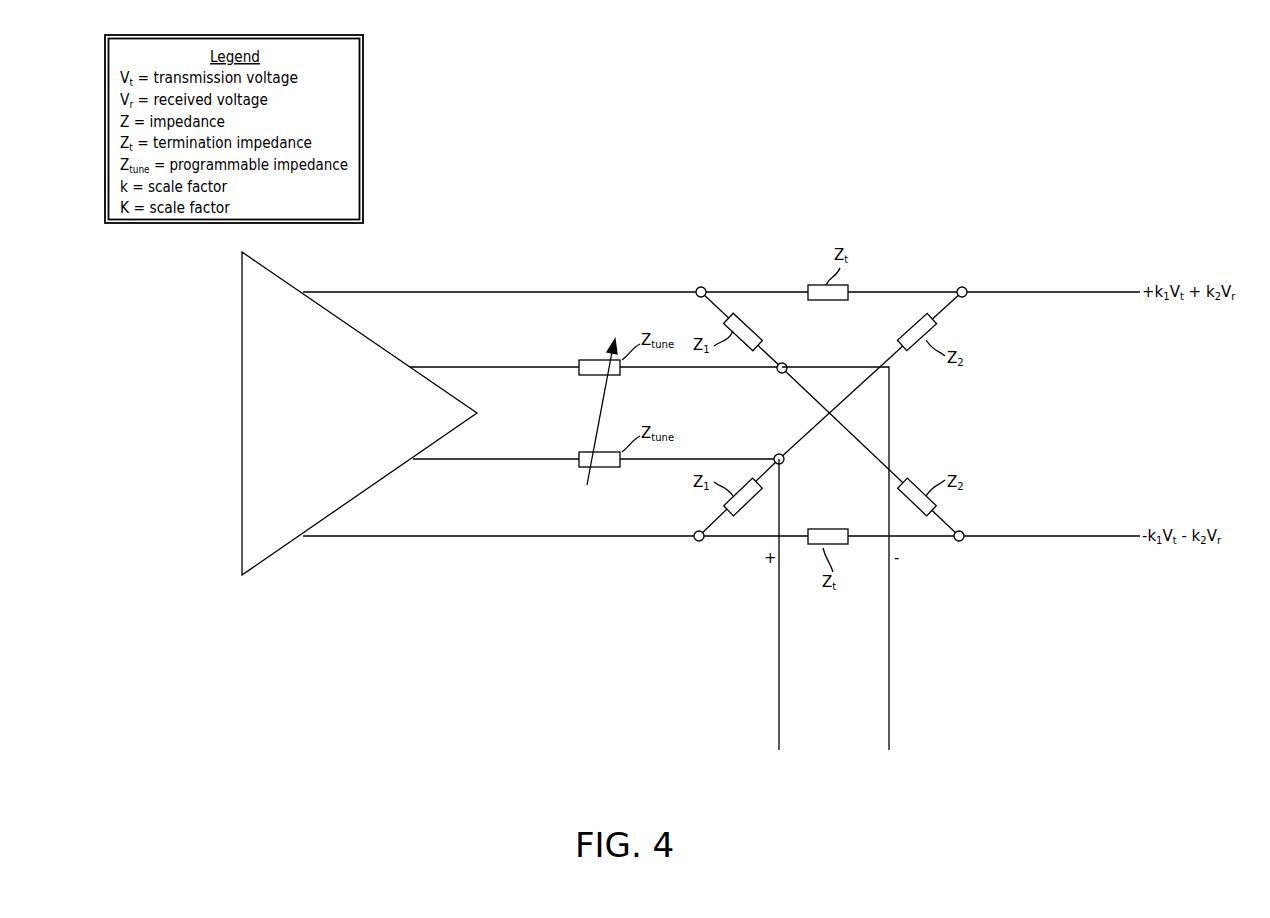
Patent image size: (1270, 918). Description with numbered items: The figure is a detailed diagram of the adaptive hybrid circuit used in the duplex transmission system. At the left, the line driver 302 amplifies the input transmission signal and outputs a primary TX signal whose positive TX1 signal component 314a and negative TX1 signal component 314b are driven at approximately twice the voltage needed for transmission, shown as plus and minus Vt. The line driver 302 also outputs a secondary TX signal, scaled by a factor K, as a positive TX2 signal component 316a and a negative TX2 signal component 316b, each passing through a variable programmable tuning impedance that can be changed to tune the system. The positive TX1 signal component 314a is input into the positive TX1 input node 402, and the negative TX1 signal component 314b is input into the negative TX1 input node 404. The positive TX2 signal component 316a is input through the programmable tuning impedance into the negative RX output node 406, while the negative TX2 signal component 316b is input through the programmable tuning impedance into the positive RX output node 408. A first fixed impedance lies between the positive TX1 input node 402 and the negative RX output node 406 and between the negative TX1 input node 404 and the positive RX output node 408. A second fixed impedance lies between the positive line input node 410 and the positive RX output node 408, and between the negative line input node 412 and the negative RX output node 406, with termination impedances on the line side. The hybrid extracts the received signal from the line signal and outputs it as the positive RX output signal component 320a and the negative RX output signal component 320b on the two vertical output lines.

The line driver 302 is at (268, 262).
The positive TX1 signal component 314a is at (541, 292).
The negative TX1 signal component 314b is at (520, 538).
The positive TX2 signal component 316a is at (508, 367).
The negative TX2 signal component 316b is at (497, 461).
The positive RX output signal component 320a is at (889, 620).
The negative RX output signal component 320b is at (779, 622).
The positive TX1 input node 402 is at (705, 287).
The negative TX1 input node 404 is at (701, 542).
The negative RX output node 406 is at (786, 363).
The positive RX output node 408 is at (784, 466).
The positive line input node 410 is at (966, 287).
The negative line input node 412 is at (964, 531).